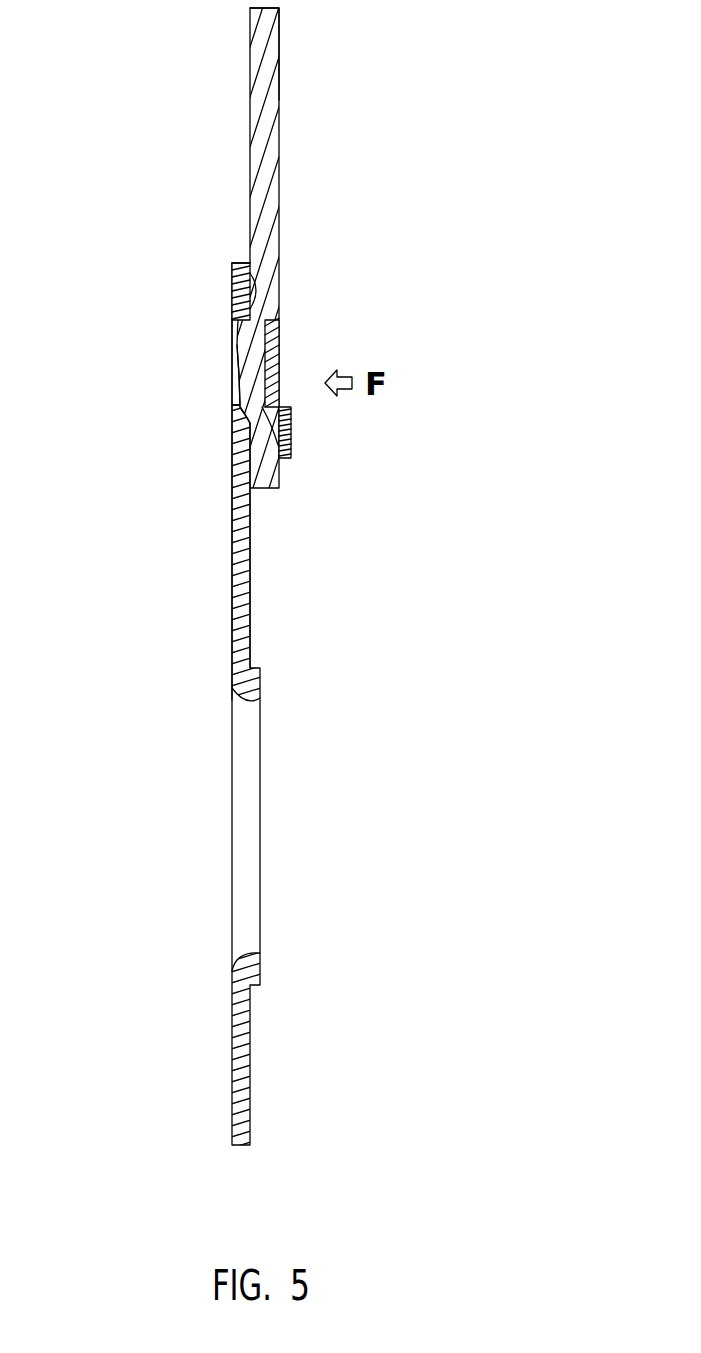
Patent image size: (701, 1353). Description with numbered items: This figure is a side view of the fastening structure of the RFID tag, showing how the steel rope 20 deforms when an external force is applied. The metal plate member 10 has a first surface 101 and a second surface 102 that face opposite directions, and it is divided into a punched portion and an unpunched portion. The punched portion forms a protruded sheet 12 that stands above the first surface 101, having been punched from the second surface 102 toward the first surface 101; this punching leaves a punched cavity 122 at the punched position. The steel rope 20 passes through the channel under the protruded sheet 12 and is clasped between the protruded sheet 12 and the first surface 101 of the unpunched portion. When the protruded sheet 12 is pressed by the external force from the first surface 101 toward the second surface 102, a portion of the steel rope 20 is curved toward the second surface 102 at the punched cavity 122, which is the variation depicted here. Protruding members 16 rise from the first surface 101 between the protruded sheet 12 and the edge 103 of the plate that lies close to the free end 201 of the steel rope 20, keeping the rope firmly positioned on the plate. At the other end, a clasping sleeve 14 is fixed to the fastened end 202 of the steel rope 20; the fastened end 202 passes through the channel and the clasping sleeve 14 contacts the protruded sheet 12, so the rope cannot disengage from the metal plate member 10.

The metal plate member 10 is at (218, 591).
The first surface 101 is at (250, 558).
The second surface 102 is at (232, 532).
The edge 103 is at (243, 262).
The protruded sheet 12 is at (279, 336).
The punched cavity 122 is at (236, 333).
The clasping sleeve 14 is at (283, 435).
The protruding members 16 is at (232, 282).
The steel rope 20 is at (290, 148).
The free end 201 is at (272, 42).
The fastened end 202 is at (263, 442).